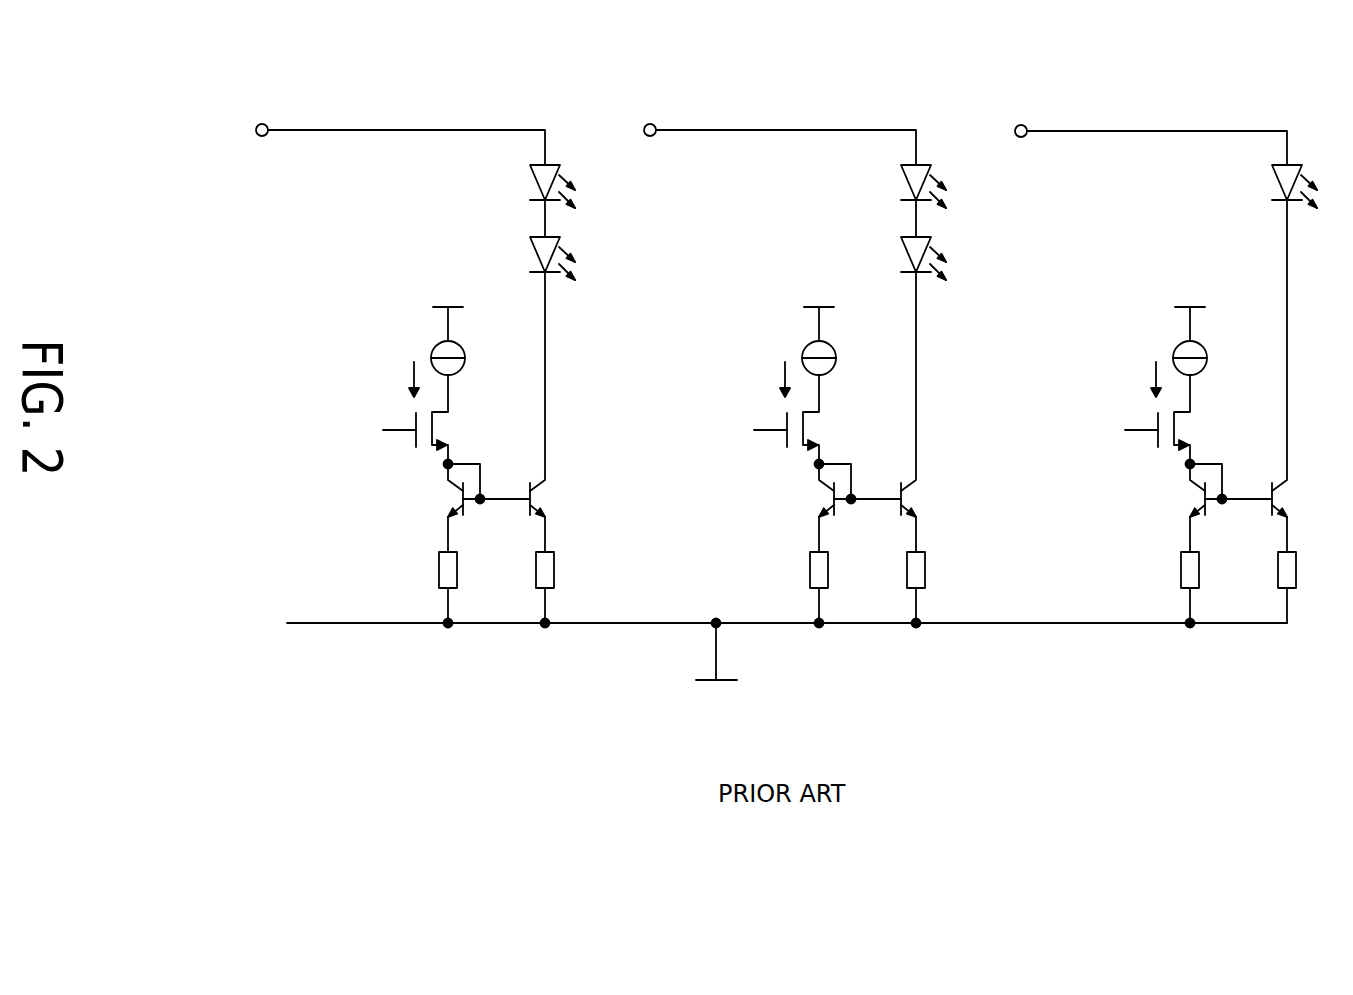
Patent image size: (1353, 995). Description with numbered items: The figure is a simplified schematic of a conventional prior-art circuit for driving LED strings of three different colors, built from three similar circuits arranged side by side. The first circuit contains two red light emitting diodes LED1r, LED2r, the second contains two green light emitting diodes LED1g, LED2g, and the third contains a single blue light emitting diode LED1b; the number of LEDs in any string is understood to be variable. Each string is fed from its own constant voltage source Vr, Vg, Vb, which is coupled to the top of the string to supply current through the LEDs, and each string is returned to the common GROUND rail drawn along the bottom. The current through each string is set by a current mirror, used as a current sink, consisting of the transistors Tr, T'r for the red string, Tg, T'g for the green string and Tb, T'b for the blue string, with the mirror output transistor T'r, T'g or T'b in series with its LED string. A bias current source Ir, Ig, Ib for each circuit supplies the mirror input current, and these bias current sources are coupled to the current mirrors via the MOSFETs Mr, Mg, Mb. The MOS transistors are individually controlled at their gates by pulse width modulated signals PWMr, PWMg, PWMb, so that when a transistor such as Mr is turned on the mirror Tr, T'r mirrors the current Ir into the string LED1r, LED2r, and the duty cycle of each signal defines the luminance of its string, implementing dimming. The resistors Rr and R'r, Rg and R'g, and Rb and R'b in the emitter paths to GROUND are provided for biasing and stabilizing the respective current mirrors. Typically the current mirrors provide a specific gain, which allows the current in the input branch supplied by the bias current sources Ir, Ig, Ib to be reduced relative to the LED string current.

The constant voltage source Vr is at (396, 126).
The constant voltage source Vg is at (776, 123).
The constant voltage source Vb is at (1146, 128).
The red light emitting diode LED1r is at (505, 186).
The red light emitting diode LED2r is at (505, 258).
The green light emitting diode LED1g is at (876, 186).
The green light emitting diode LED2g is at (876, 258).
The blue light emitting diode LED1b is at (1248, 186).
The bias current source Ir is at (437, 352).
The bias current source Ig is at (808, 352).
The bias current source Ib is at (1178, 352).
The pulse width modulated signal PWMr is at (361, 430).
The pulse width modulated signal PWMg is at (731, 430).
The pulse width modulated signal PWMb is at (1101, 430).
The MOSFET Mr is at (453, 419).
The MOSFET Mg is at (825, 419).
The MOSFET Mb is at (1198, 419).
The transistor Tr is at (436, 508).
The transistor T'r is at (559, 412).
The transistor Tg is at (807, 508).
The transistor T'g is at (933, 412).
The transistor Tb is at (1178, 508).
The transistor T'b is at (1303, 376).
The resistor Rr is at (467, 587).
The resistor R'r is at (568, 587).
The resistor Rg is at (840, 587).
The resistor R'g is at (942, 587).
The resistor Rb is at (1210, 587).
The resistor R'b is at (1313, 587).
The ground node GROUND is at (714, 669).